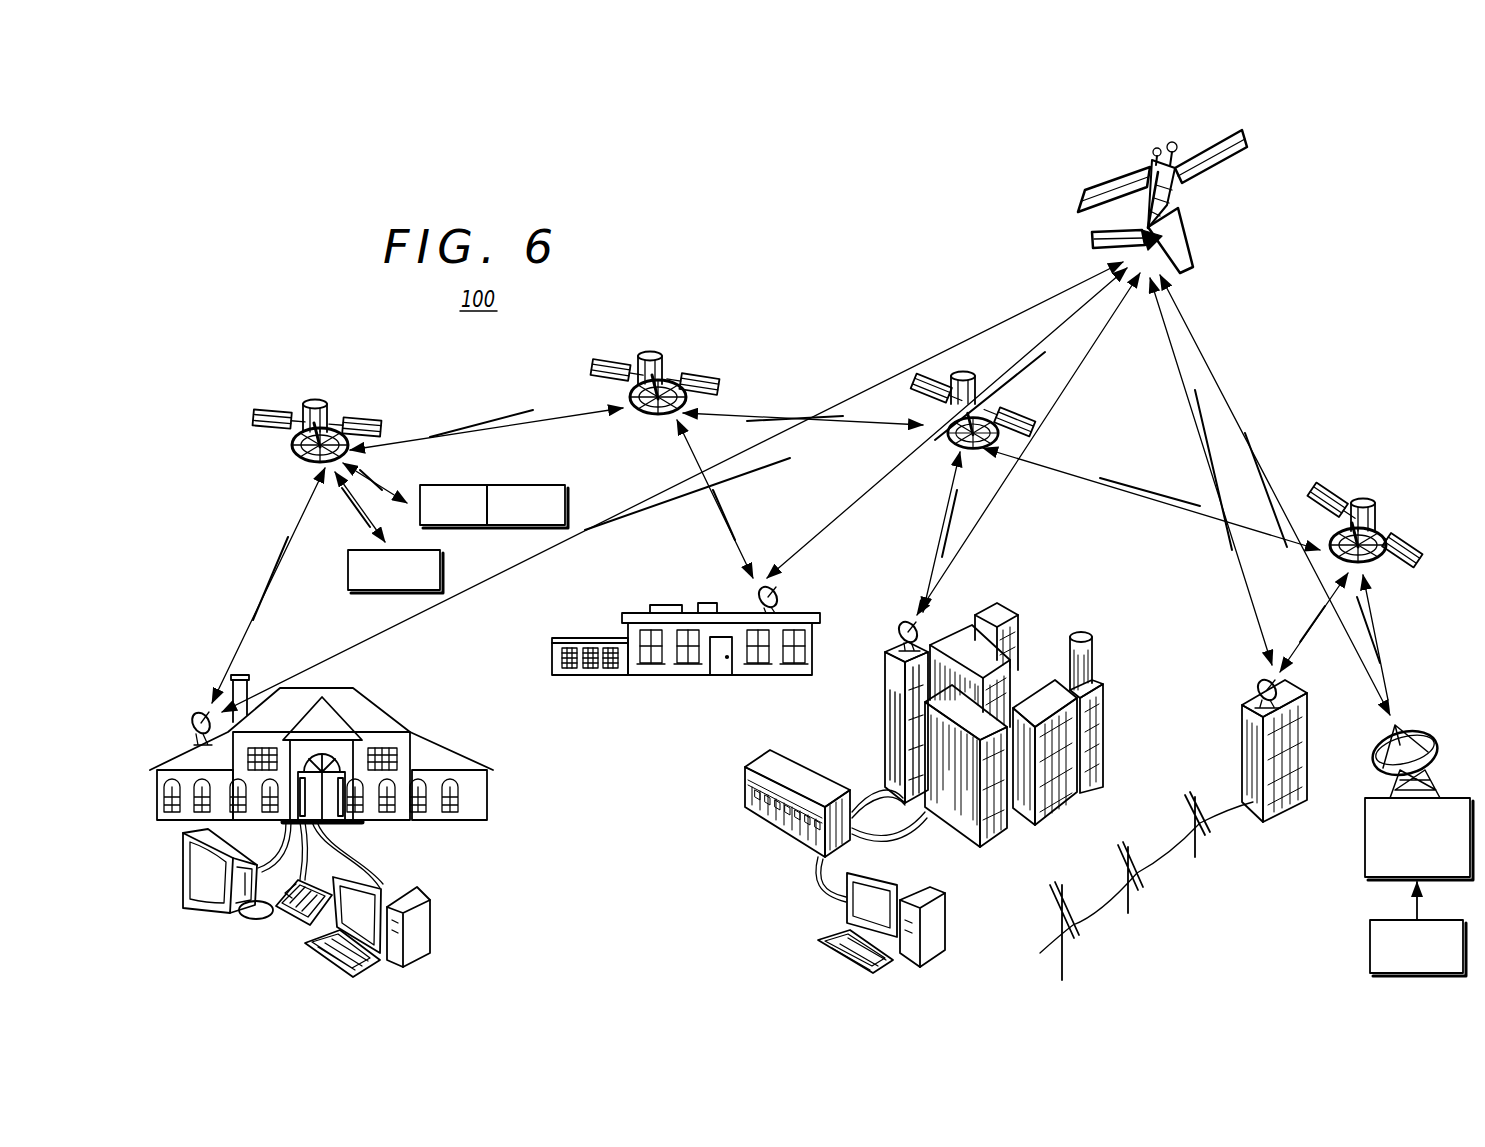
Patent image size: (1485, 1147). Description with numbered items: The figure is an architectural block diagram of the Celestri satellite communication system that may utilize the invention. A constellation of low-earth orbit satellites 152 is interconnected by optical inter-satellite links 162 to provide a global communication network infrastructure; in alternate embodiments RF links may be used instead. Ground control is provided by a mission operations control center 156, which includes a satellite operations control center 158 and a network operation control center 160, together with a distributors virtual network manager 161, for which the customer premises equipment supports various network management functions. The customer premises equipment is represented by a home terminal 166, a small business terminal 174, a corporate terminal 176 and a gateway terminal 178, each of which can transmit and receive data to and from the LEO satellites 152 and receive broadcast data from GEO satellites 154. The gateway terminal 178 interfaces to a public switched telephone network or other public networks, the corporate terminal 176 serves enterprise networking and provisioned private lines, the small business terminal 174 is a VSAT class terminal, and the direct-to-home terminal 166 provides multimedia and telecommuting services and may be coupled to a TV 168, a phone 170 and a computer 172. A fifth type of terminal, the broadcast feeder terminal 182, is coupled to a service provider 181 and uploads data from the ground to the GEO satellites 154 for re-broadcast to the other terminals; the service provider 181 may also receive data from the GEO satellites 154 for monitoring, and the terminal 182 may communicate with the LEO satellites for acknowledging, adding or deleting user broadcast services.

The low-earth orbit satellites 152 is at (258, 412).
The GEO satellites 154 is at (1084, 192).
The mission operations control center 156 is at (497, 502).
The satellite operations control center 158 is at (455, 485).
The network operation control center 160 is at (535, 485).
The distributors virtual network manager 161 is at (355, 597).
The optical inter-satellite links 162 is at (495, 418).
The home terminal 166 is at (198, 718).
The TV 168 is at (210, 877).
The phone 170 is at (285, 923).
The computer 172 is at (427, 913).
The small business terminal 174 is at (780, 595).
The corporate terminal 176 is at (902, 625).
The gateway terminal 178 is at (1258, 683).
The service provider 181 is at (1370, 950).
The broadcast feeder terminal 182 is at (1365, 850).